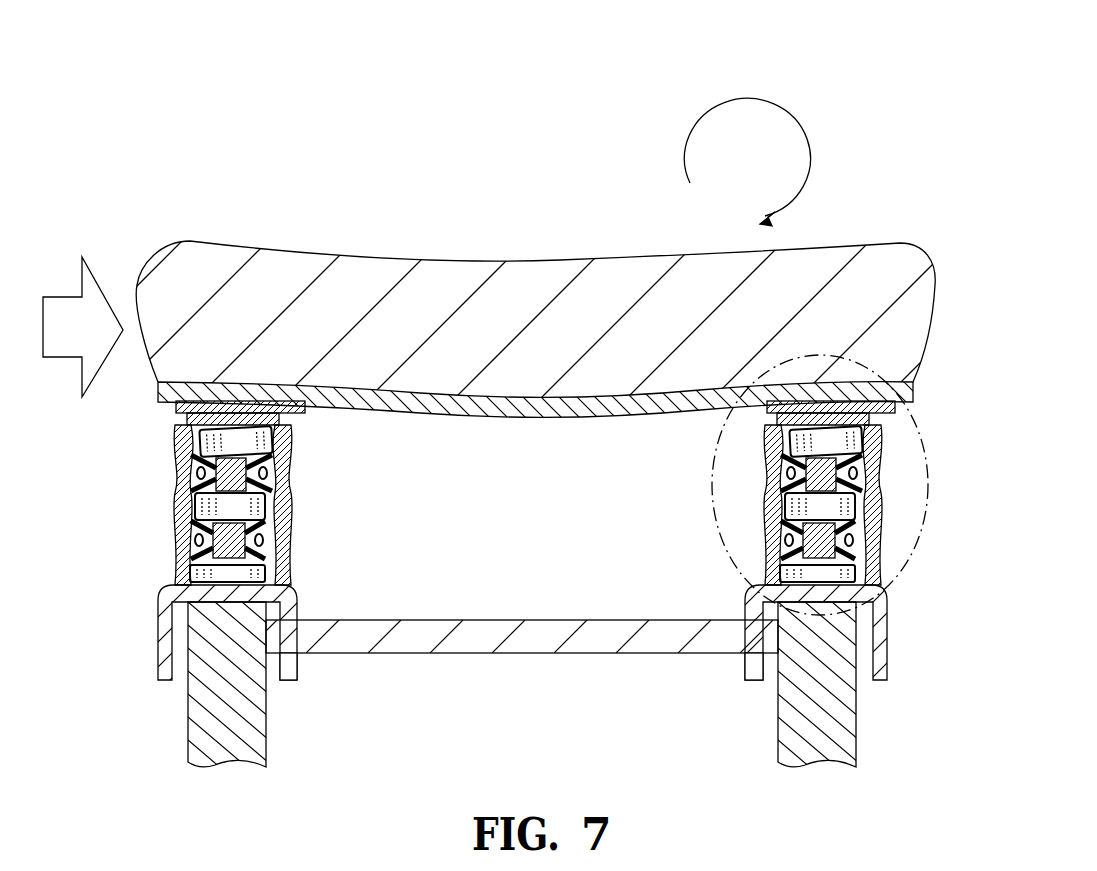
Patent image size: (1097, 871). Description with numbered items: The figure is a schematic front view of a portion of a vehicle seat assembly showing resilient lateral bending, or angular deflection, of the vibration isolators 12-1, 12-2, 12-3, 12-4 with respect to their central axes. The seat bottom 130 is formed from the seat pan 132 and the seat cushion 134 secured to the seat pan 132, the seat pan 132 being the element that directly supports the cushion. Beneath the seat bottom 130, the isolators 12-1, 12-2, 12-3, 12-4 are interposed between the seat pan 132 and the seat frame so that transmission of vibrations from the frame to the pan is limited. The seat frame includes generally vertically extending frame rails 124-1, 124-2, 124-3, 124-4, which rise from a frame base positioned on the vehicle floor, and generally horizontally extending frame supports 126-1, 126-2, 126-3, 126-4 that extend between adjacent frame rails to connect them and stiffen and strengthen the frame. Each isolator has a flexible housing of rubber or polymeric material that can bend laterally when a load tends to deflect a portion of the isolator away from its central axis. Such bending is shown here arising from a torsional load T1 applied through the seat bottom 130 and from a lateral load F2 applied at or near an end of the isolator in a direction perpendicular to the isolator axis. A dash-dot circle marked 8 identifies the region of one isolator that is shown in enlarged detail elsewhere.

The detail region of FIG. 8 is at (720, 523).
The vibration isolator 12-1 is at (302, 499).
The vibration isolator 12-2 is at (290, 522).
The vibration isolator 12-3 is at (765, 490).
The vibration isolator 12-4 is at (751, 499).
The frame rail 124-1 is at (164, 684).
The frame rail 124-2 is at (202, 717).
The frame rail 124-3 is at (812, 733).
The frame rail 124-4 is at (864, 690).
The frame support 126-1 is at (522, 693).
The frame support 126-2 is at (159, 632).
The frame support 126-3 is at (886, 632).
The frame support 126-4 is at (422, 654).
The seat bottom 130 is at (862, 222).
The seat pan 132 is at (160, 388).
The seat cushion 134 is at (275, 268).
The torsional load T1 is at (735, 99).
The lateral load F2 is at (63, 296).